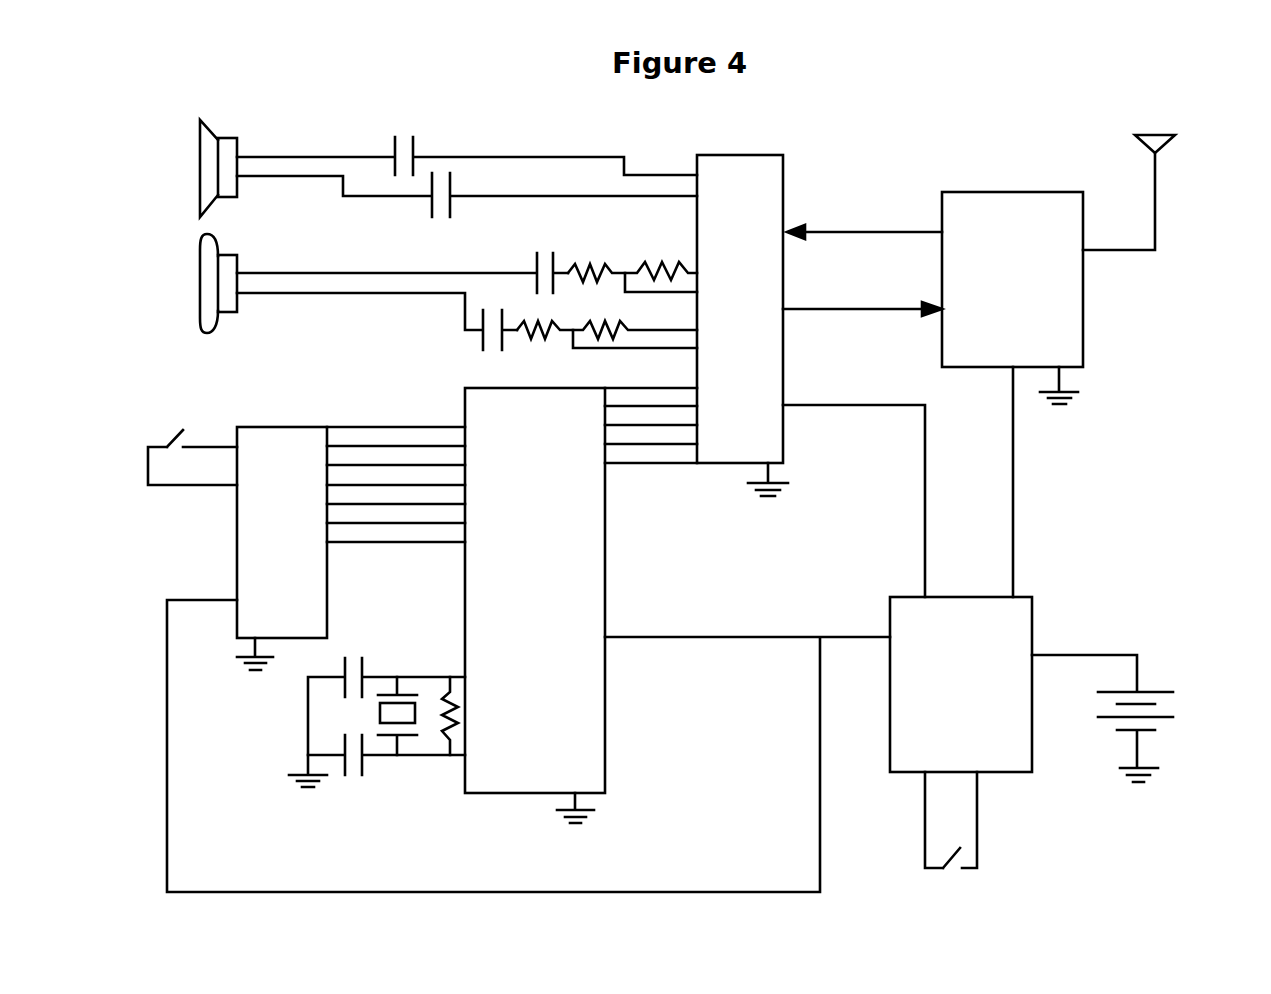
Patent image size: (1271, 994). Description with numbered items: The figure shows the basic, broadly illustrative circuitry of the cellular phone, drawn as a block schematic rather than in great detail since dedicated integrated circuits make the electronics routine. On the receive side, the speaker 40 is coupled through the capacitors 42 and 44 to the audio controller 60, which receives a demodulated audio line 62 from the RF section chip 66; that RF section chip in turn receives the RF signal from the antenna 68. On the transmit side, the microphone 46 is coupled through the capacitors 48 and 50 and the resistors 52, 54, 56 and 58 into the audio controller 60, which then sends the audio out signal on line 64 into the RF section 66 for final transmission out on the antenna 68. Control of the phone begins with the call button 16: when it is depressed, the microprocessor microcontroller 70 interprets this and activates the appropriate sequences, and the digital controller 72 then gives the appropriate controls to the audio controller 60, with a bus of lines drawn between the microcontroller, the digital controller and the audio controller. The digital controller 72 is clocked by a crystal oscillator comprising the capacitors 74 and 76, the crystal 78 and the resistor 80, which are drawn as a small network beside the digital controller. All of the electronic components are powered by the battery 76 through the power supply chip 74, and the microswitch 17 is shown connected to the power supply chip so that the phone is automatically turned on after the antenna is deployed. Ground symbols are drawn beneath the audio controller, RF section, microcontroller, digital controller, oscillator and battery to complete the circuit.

The call button 16 is at (192, 443).
The microswitch 17 is at (968, 831).
The speaker 40 is at (189, 158).
The capacitor 42 is at (467, 145).
The capacitor 44 is at (467, 203).
The microphone 46 is at (185, 294).
The capacitor 48 is at (402, 265).
The capacitor 50 is at (377, 320).
The resistor 52 is at (632, 266).
The resistor 54 is at (661, 261).
The resistor 56 is at (607, 323).
The resistor 58 is at (635, 319).
The audio controller 60 is at (765, 360).
The demodulated audio line 62 is at (864, 234).
The audio out line 64 is at (862, 309).
The RF section chip 66 is at (1012, 384).
The antenna 68 is at (1142, 182).
The microprocessor microcontroller 70 is at (528, 649).
The digital controller 72 is at (535, 595).
The capacitor / power supply chip 74 is at (660, 680).
The capacitor / battery 76 is at (760, 718).
The crystal 78 is at (404, 705).
The resistor 80 is at (443, 716).